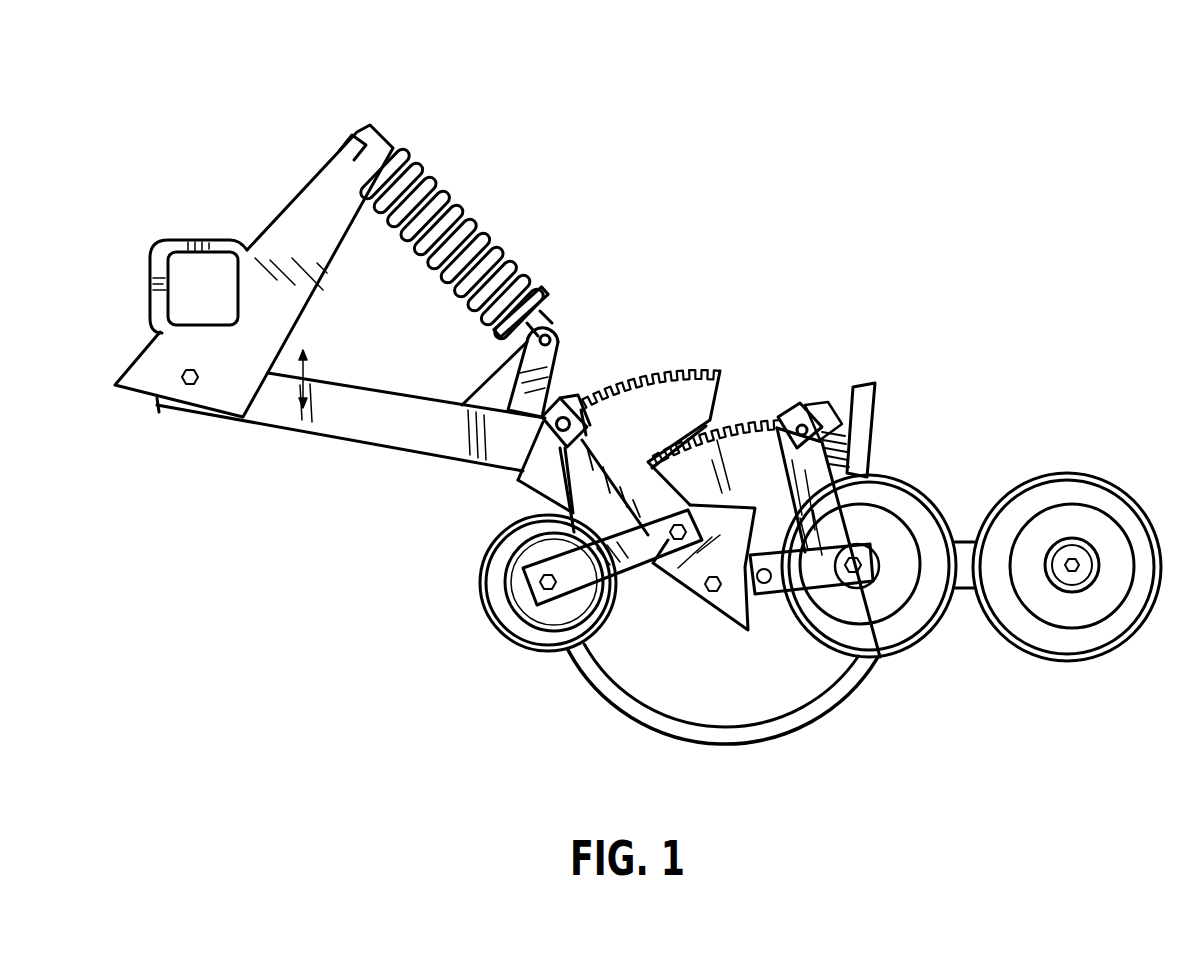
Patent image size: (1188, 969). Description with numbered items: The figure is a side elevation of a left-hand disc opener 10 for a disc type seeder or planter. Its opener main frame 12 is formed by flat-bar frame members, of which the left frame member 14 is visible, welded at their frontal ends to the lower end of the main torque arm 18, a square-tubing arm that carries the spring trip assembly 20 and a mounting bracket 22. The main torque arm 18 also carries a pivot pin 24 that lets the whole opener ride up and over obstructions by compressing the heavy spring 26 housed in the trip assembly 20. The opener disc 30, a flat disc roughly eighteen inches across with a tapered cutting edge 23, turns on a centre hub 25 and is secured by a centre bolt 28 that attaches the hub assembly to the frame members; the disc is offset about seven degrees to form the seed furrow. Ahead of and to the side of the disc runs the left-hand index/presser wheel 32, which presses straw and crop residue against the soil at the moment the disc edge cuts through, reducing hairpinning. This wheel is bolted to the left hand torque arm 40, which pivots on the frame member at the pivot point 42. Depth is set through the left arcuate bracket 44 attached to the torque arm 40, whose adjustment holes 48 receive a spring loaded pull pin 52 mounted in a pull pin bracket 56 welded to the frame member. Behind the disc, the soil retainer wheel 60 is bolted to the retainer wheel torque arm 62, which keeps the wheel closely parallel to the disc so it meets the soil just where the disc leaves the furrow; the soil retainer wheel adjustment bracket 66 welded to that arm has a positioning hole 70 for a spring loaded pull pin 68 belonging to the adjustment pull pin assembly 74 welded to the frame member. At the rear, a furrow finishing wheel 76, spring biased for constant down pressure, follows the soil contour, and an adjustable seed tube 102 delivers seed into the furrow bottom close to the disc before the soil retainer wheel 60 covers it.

The disc opener 10 is at (800, 233).
The opener main frame 12 is at (400, 522).
The left frame member 14 is at (556, 482).
The main torque arm 18 is at (375, 430).
The spring trip assembly 20 is at (360, 117).
The mounting bracket 22 is at (312, 203).
The tapered cutting edge 23 is at (648, 722).
The pivot pin 24 is at (188, 387).
The centre hub 25 is at (700, 607).
The heavy spring 26 is at (465, 212).
The centre bolt 28 is at (720, 593).
The opener disc 30 is at (625, 678).
The left-hand index/presser wheel 32 is at (486, 590).
The left hand torque arm 40 is at (527, 545).
The pivot point 42 is at (673, 542).
The left arcuate bracket 44 is at (657, 410).
The adjustment holes 48 is at (693, 363).
The spring loaded pull pin 52 is at (548, 425).
The pull pin bracket 56 is at (568, 400).
The soil retainer wheel 60 is at (937, 610).
The retainer wheel torque arm 62 is at (836, 578).
The soil retainer wheel adjustment bracket 66 is at (820, 487).
The spring loaded pull pin 68 is at (807, 407).
The positioning hole 70 is at (735, 420).
The adjustment pull pin assembly 74 is at (823, 407).
The furrow finishing wheel 76 is at (1123, 637).
The adjustable seed tube 102 is at (865, 402).